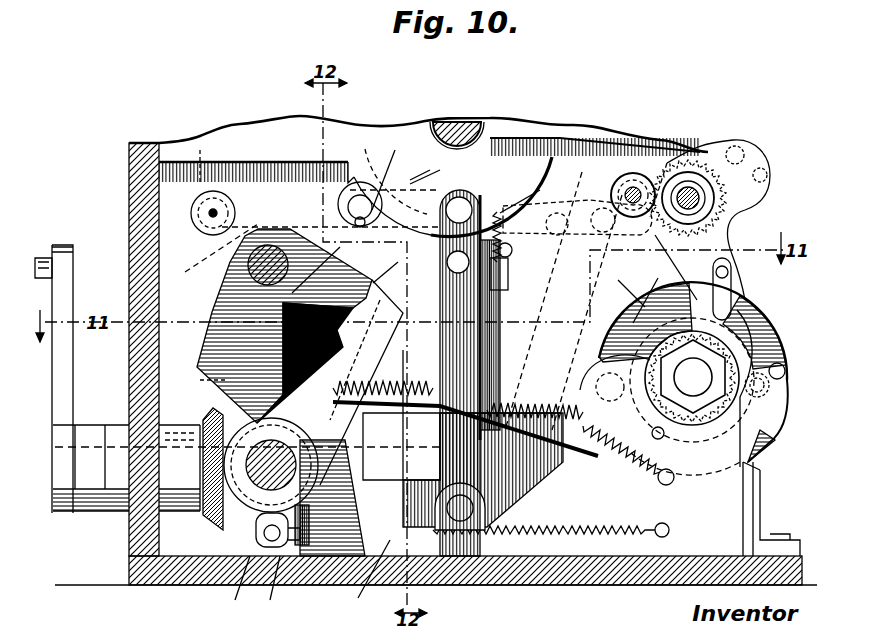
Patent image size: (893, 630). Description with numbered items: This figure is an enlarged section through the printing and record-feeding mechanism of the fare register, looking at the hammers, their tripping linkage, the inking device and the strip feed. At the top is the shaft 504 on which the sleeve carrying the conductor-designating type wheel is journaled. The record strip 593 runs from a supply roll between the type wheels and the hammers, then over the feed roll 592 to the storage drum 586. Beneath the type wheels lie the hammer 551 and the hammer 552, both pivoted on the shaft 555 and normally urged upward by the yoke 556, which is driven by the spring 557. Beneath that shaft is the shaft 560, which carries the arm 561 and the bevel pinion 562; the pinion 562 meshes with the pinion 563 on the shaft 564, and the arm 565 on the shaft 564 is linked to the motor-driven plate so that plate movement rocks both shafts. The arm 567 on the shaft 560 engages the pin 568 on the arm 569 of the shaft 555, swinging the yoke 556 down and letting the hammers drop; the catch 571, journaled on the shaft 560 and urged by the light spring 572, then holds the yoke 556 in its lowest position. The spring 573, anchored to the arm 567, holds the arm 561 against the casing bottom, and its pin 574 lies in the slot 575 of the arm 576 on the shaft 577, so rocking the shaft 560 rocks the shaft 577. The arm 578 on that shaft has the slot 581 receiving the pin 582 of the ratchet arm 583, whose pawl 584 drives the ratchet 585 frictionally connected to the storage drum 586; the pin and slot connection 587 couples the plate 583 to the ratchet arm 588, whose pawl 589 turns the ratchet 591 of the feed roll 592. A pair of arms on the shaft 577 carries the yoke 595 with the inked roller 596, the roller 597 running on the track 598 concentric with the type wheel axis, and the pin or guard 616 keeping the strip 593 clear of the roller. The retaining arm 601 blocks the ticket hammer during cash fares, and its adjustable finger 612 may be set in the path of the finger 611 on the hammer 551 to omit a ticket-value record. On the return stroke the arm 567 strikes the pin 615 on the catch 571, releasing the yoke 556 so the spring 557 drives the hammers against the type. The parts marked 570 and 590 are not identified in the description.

The shaft 504 is at (467, 118).
The record strip 593 is at (200, 150).
The track 598 is at (385, 198).
The inked roller 596 is at (393, 170).
The pin or guard 616 is at (427, 166).
The yoke 595 is at (492, 191).
The shaft 555 is at (283, 240).
The roller 597 is at (340, 213).
The yoke 556 is at (325, 263).
The hammer 552 is at (395, 262).
The arm 569 is at (222, 300).
The pin 568 is at (195, 382).
The pinion 563 is at (205, 410).
The arm 567 is at (268, 405).
The shaft 560 is at (262, 505).
The bevel pinion 562 is at (213, 515).
The catch 571 is at (398, 322).
The pin 615 is at (392, 375).
The arm 561 is at (330, 545).
The lever 570 is at (500, 333).
The retaining arm 601 is at (500, 352).
The spring 557 is at (500, 388).
The arm 578 is at (542, 391).
The spring 573 is at (598, 470).
The light spring 572 is at (598, 528).
The shaft 577 is at (490, 508).
The slot 575 is at (230, 590).
The pin 574 is at (265, 590).
The arm 576 is at (362, 578).
The finger 611 is at (508, 272).
The hammer 551 is at (500, 305).
The adjustable finger 612 is at (512, 250).
The link 590 is at (577, 224).
The pin 582 is at (577, 301).
The slot 581 is at (587, 312).
The feed roll 592 is at (665, 170).
The ratchet 591 is at (683, 172).
The ratchet arm 588 is at (760, 160).
The pawl 589 is at (757, 140).
The ratchet 585 is at (770, 340).
The storage drum 586 is at (652, 290).
The pin and slot connection 587 is at (735, 285).
The ratchet arm 583 is at (762, 405).
The pawl 584 is at (752, 352).
The arm 565 is at (72, 405).
The shaft 564 is at (48, 485).